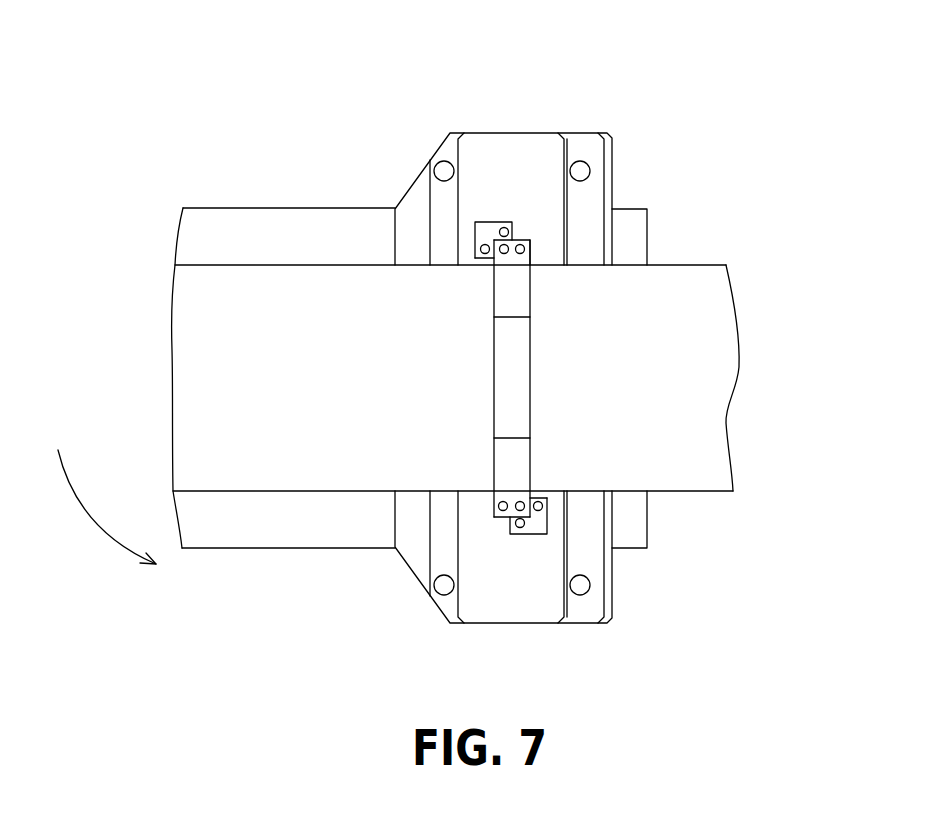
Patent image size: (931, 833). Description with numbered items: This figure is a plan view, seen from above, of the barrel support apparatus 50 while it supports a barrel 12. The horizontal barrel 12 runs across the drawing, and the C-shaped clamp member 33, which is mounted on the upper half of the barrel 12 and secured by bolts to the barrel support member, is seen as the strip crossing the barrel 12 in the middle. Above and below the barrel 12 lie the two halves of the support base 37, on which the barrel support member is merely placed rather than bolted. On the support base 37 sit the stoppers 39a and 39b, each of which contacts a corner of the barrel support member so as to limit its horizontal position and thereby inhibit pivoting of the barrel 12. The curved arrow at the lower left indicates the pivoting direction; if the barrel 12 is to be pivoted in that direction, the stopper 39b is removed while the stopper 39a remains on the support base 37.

The barrel 12 is at (303, 298).
The clamp member 33 is at (515, 361).
The support base 37 is at (529, 160).
The stopper 39a is at (486, 228).
The stopper 39b is at (539, 523).
The barrel support apparatus 50 is at (743, 138).